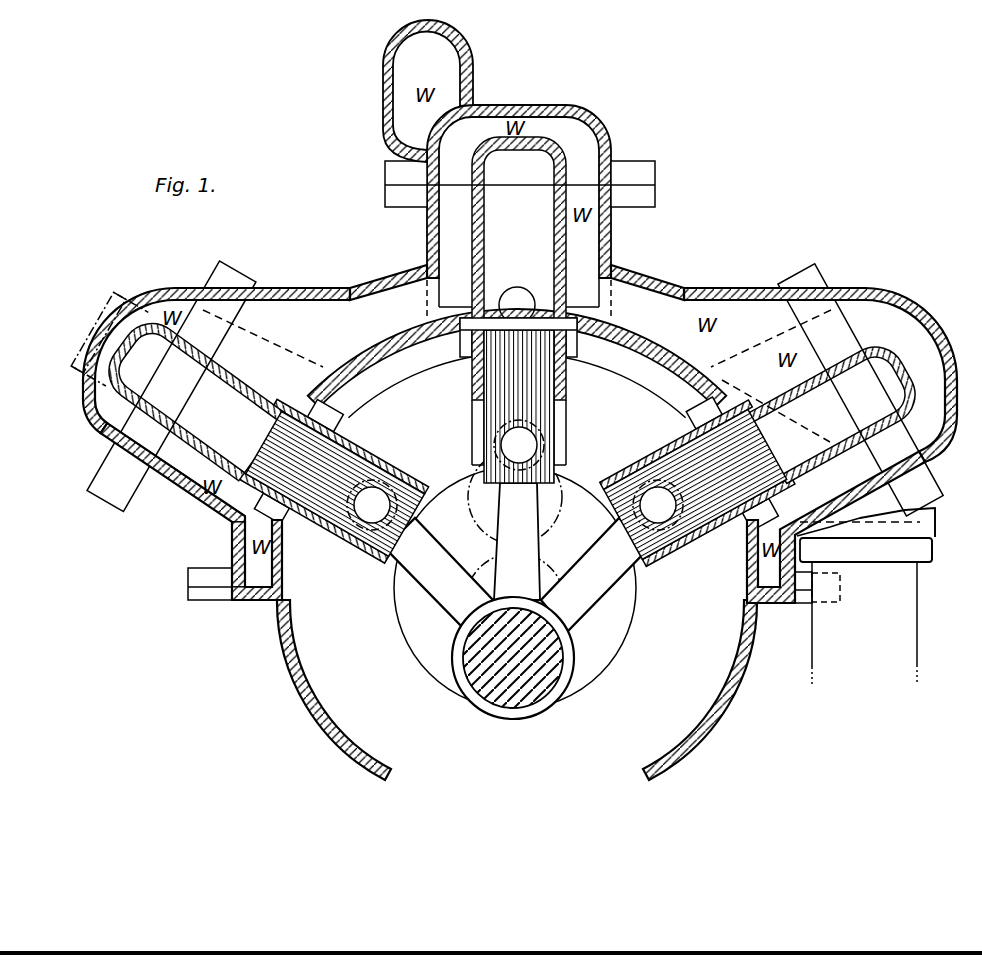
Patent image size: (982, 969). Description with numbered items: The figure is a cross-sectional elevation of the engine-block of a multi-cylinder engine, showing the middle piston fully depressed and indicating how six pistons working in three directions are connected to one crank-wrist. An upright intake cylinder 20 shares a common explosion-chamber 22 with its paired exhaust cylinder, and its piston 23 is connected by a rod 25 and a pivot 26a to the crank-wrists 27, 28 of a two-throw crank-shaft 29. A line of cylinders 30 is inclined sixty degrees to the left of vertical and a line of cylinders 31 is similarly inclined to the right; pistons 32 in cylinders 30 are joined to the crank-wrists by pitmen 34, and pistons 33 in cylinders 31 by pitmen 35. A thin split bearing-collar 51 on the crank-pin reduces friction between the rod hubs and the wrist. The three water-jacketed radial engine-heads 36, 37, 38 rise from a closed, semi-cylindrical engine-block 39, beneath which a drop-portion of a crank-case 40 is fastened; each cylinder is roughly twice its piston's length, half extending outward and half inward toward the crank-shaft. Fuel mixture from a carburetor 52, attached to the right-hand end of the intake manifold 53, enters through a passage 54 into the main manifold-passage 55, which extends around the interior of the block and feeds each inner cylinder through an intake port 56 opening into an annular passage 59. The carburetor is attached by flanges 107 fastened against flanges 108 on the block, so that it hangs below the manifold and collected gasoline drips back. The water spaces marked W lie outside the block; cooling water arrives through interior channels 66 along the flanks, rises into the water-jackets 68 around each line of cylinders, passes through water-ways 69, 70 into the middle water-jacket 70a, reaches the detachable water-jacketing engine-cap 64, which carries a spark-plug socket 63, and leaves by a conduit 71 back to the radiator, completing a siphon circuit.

The intake cylinder 20 is at (458, 402).
The common explosion-chamber 22 is at (520, 183).
The piston 23 is at (519, 406).
The rod 25 is at (517, 541).
The pivot 26a is at (515, 475).
The left-hand crank-wrist 27 is at (572, 652).
The crank-wrist 28 is at (480, 520).
The two-throw crank-shaft 29 is at (560, 575).
The cylinder 30 is at (263, 437).
The cylinder 31 is at (763, 451).
The piston 32 is at (413, 460).
The piston 33 is at (663, 563).
The pitman 34 is at (439, 575).
The pitman 35 is at (595, 575).
The engine-head 36 is at (866, 521).
The engine-head 37 is at (606, 236).
The engine-head 38 is at (178, 492).
The engine-block 39 is at (233, 553).
The crank-case 40 is at (295, 717).
The split bearing-collar 51 is at (560, 690).
The carburetor 52 is at (917, 620).
The intake manifold 53 is at (932, 528).
The passage 54 is at (938, 511).
The main manifold-passage 55 is at (606, 385).
The intake port 56 is at (538, 312).
The annular passage 59 is at (460, 347).
The socket 63 is at (146, 306).
The engine-cap 64 is at (596, 150).
The interior channel 66 is at (258, 596).
The water-jacket 68 is at (513, 513).
The water-way 69 is at (255, 349).
The water-way 70 is at (784, 363).
The water-jacket of middle engine-head 70a is at (517, 268).
The conduit 71 is at (426, 30).
The flange 107 is at (934, 552).
The flange 108 is at (866, 549).